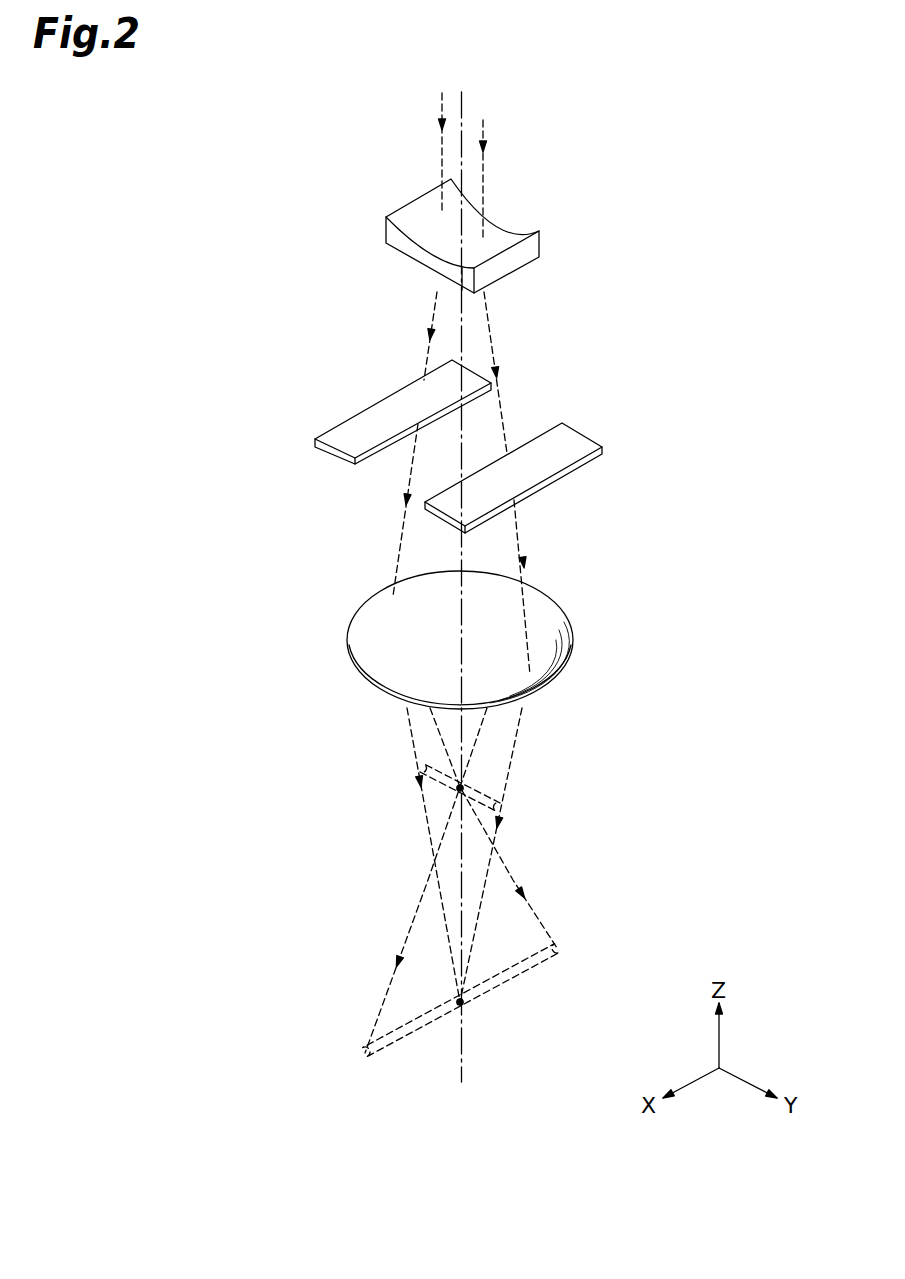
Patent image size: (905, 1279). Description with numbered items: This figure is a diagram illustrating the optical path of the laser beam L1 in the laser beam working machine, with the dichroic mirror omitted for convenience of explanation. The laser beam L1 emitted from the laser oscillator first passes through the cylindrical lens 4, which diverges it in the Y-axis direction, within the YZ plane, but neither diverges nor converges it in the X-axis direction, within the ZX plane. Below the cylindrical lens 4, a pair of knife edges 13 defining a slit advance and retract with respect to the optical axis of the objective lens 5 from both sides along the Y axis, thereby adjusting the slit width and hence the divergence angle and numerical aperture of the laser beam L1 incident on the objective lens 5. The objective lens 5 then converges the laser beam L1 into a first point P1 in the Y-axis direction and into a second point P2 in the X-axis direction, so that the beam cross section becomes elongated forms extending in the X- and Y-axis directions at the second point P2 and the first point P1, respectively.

The cylindrical lens 4 is at (539, 242).
The knife edges 13 is at (337, 423).
The objective lens 5 is at (550, 600).
The laser beam L1 is at (485, 190).
The second point P2 is at (463, 786).
The first point P1 is at (463, 1003).